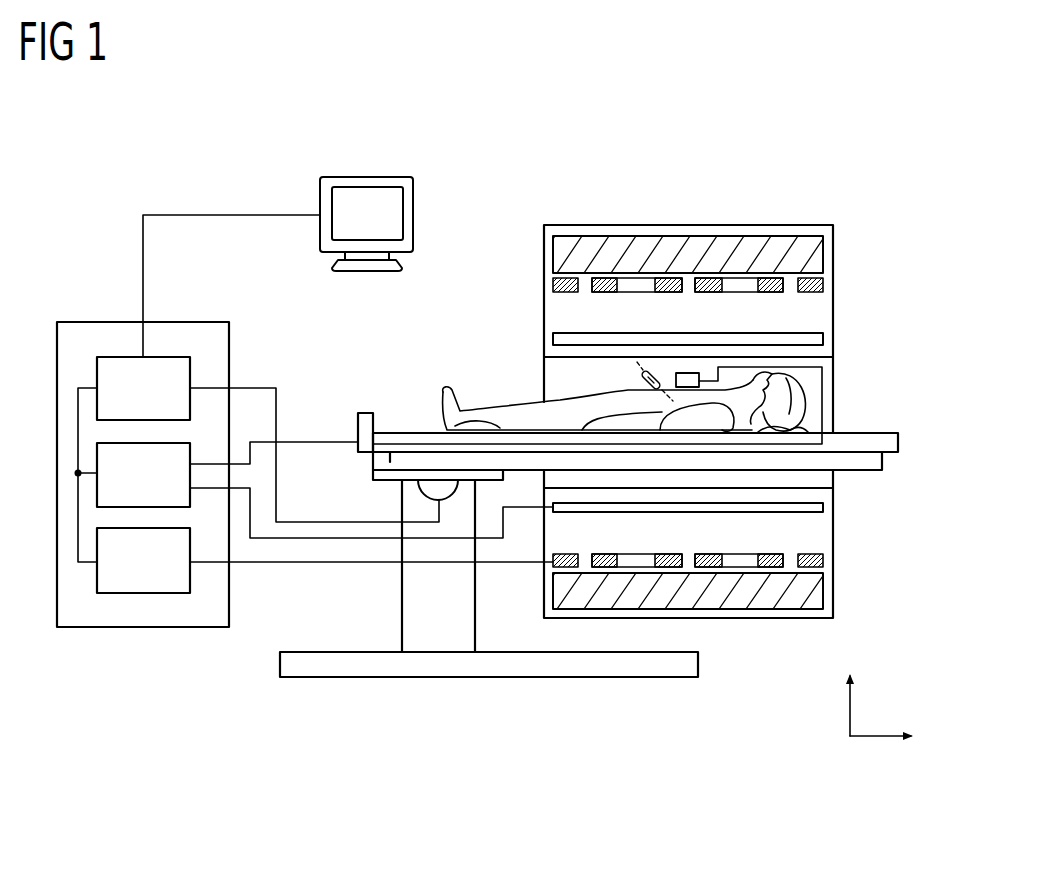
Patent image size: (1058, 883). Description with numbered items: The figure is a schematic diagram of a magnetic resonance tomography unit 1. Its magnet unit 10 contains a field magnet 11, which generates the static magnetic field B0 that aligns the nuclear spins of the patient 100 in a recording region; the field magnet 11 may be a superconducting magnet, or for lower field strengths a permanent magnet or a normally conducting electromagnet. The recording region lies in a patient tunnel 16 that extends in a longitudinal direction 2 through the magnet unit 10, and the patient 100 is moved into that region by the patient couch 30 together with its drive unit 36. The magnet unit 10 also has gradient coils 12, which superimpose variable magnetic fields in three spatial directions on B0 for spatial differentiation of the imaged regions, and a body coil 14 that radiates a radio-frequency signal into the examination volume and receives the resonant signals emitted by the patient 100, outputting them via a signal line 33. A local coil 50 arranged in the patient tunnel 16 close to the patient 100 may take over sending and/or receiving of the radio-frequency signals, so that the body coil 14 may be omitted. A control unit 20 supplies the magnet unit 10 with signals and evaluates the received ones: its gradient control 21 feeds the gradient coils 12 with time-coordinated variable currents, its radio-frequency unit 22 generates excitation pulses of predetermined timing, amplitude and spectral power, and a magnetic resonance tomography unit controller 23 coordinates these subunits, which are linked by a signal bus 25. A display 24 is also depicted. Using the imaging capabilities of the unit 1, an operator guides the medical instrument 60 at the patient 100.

The magnetic resonance tomography unit 1 is at (491, 186).
The longitudinal direction 2 is at (878, 734).
The magnet unit 10 is at (824, 218).
The field magnet 11 is at (687, 255).
The gradient coils 12 is at (768, 280).
The body coil 14 is at (823, 339).
The patient tunnel 16 is at (853, 386).
The control unit 20 is at (216, 308).
The gradient control 21 is at (129, 577).
The radio-frequency unit 22 is at (129, 492).
The magnetic resonance tomography unit controller 23 is at (129, 405).
The display unit 24 is at (364, 177).
The signal bus 25 is at (57, 430).
The patient couch 30 is at (521, 484).
The signal line 33 is at (823, 409).
The drive unit 36 is at (420, 500).
The local coil 50 is at (687, 373).
The medical instrument 60 is at (645, 377).
The patient 100 is at (476, 420).